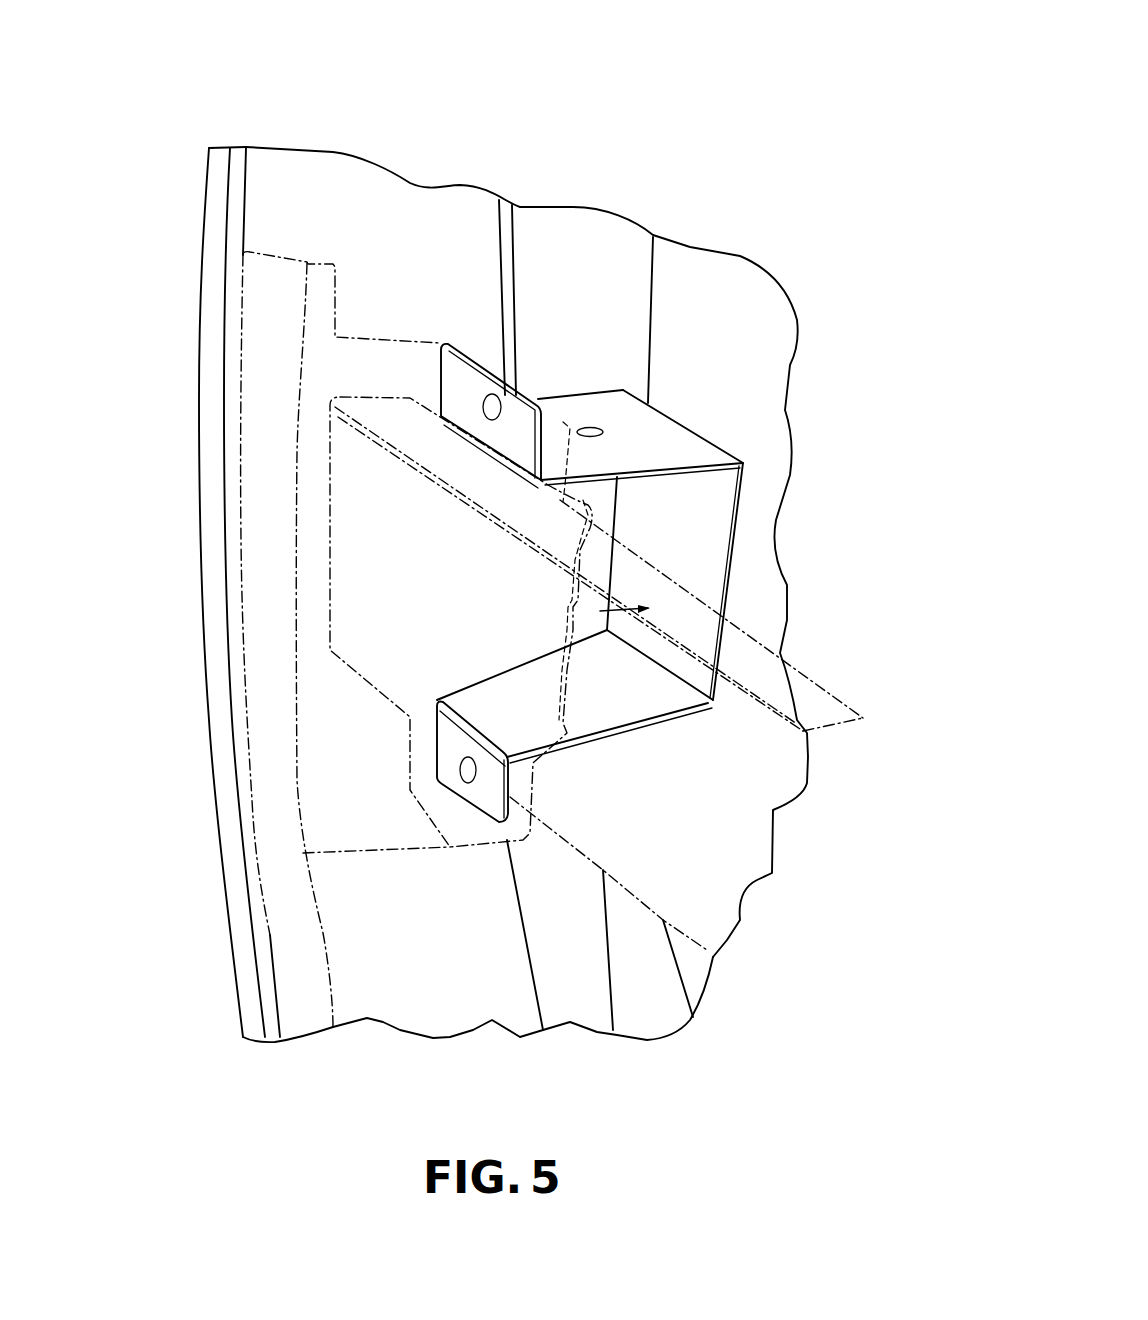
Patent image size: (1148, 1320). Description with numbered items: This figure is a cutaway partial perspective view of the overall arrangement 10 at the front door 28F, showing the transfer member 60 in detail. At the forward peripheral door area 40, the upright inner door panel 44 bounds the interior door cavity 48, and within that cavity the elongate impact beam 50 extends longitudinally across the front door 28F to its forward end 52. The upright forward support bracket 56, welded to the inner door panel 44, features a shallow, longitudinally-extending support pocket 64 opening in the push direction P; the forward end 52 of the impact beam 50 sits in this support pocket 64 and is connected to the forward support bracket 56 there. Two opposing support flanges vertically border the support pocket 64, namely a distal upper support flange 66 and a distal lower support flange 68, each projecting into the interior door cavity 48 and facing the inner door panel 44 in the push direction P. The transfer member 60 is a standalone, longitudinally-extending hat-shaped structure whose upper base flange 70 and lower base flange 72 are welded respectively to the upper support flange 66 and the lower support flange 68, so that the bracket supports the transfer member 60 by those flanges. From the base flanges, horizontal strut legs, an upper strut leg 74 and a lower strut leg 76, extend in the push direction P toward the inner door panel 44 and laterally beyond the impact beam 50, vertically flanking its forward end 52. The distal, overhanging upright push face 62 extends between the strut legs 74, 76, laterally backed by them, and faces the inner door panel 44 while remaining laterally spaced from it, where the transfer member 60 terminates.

The vehicle body assembly 10 is at (307, 111).
The front door 28F is at (207, 173).
The forward peripheral door area 40 is at (277, 228).
The inner door panel 44 is at (300, 995).
The interior door cavity 48 is at (367, 987).
The impact beam 50 is at (835, 693).
The forward end 52 is at (353, 575).
The forward support bracket 56 is at (240, 293).
The transfer member 60 is at (600, 393).
The push face 62 is at (737, 543).
The support pocket 64 is at (567, 525).
The upper support flange 66 is at (453, 383).
The lower support flange 68 is at (443, 772).
The upper base flange 70 is at (650, 397).
The lower base flange 72 is at (507, 782).
The upper strut leg 74 is at (660, 432).
The lower strut leg 76 is at (627, 690).
The push direction P is at (617, 607).